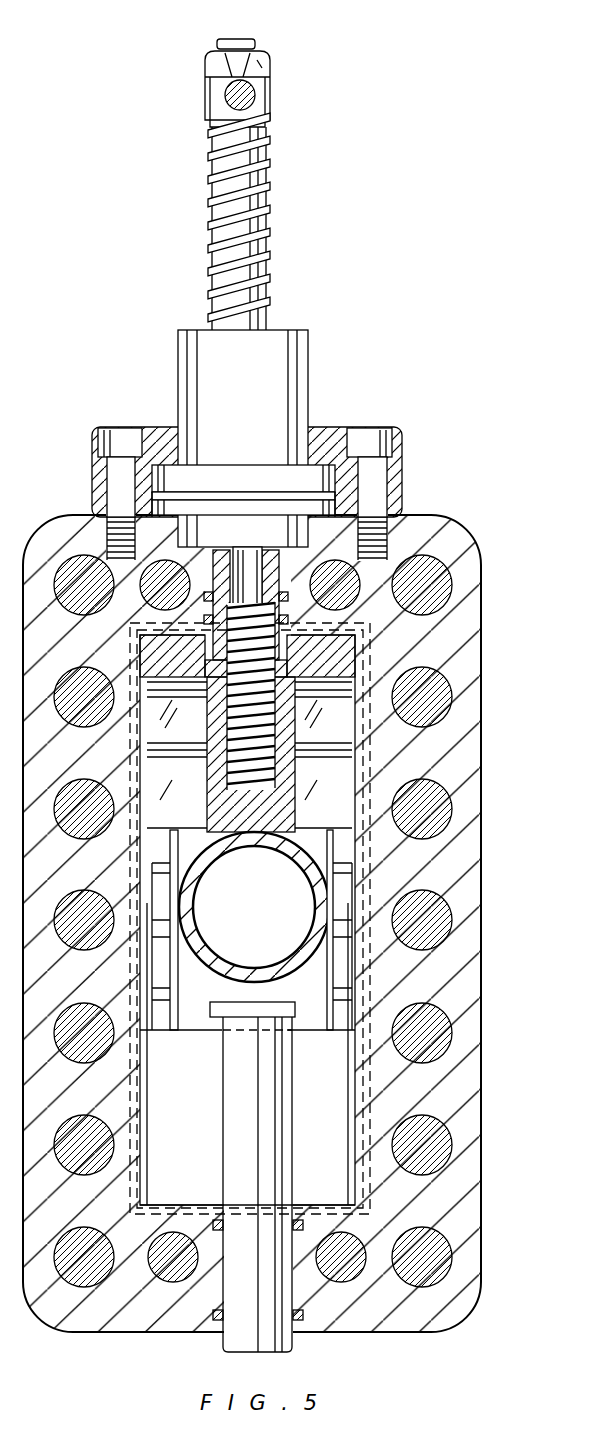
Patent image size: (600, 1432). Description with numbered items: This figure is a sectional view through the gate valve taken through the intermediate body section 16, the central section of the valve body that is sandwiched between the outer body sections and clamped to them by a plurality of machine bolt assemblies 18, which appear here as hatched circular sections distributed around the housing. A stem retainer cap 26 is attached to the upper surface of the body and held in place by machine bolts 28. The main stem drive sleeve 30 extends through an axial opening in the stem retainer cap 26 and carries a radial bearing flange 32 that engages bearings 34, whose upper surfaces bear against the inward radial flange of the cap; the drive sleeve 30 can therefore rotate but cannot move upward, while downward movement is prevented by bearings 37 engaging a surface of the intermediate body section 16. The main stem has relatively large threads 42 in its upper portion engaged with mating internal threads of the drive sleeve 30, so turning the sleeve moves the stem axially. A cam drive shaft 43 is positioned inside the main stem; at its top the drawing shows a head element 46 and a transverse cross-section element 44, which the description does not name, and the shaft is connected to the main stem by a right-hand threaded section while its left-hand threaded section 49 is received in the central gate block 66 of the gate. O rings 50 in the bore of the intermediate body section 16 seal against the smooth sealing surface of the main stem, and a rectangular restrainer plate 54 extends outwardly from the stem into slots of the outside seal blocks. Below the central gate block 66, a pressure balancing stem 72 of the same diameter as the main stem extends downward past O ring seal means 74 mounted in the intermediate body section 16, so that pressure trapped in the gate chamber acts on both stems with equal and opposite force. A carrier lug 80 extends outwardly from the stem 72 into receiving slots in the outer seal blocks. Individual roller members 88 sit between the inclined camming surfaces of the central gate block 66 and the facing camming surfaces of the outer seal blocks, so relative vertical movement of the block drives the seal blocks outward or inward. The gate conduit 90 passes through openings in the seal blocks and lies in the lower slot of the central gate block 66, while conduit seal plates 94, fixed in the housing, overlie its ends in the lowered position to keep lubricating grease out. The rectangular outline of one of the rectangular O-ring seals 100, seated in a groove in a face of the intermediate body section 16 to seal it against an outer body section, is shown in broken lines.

The intermediate body section 16 is at (481, 690).
The machine bolt assemblies 18 is at (440, 578).
The stem retainer cap 26 is at (403, 455).
The machine bolts 28 is at (360, 428).
The main stem drive sleeve 30 is at (292, 362).
The radial bearing flange 32 is at (336, 505).
The bearings 34 is at (336, 479).
The bearings 37 is at (160, 537).
The threads 42 is at (266, 180).
The cam drive shaft 43 is at (240, 40).
The cross pin 44 is at (247, 95).
The screw head 46 is at (262, 58).
The threaded section 49 is at (248, 735).
The O rings 50 is at (290, 620).
The rectangular restrainer plate 54 is at (352, 660).
The central gate block 66 is at (280, 806).
The pressure balancing stem 72 is at (232, 1140).
The O ring seal means 74 is at (300, 1318).
The carrier lug 80 is at (245, 1010).
The roller members 88 is at (178, 795).
The gate conduit 90 is at (318, 886).
The conduit seal plates 94 is at (308, 1137).
The rectangular O-ring seals 100 is at (370, 988).